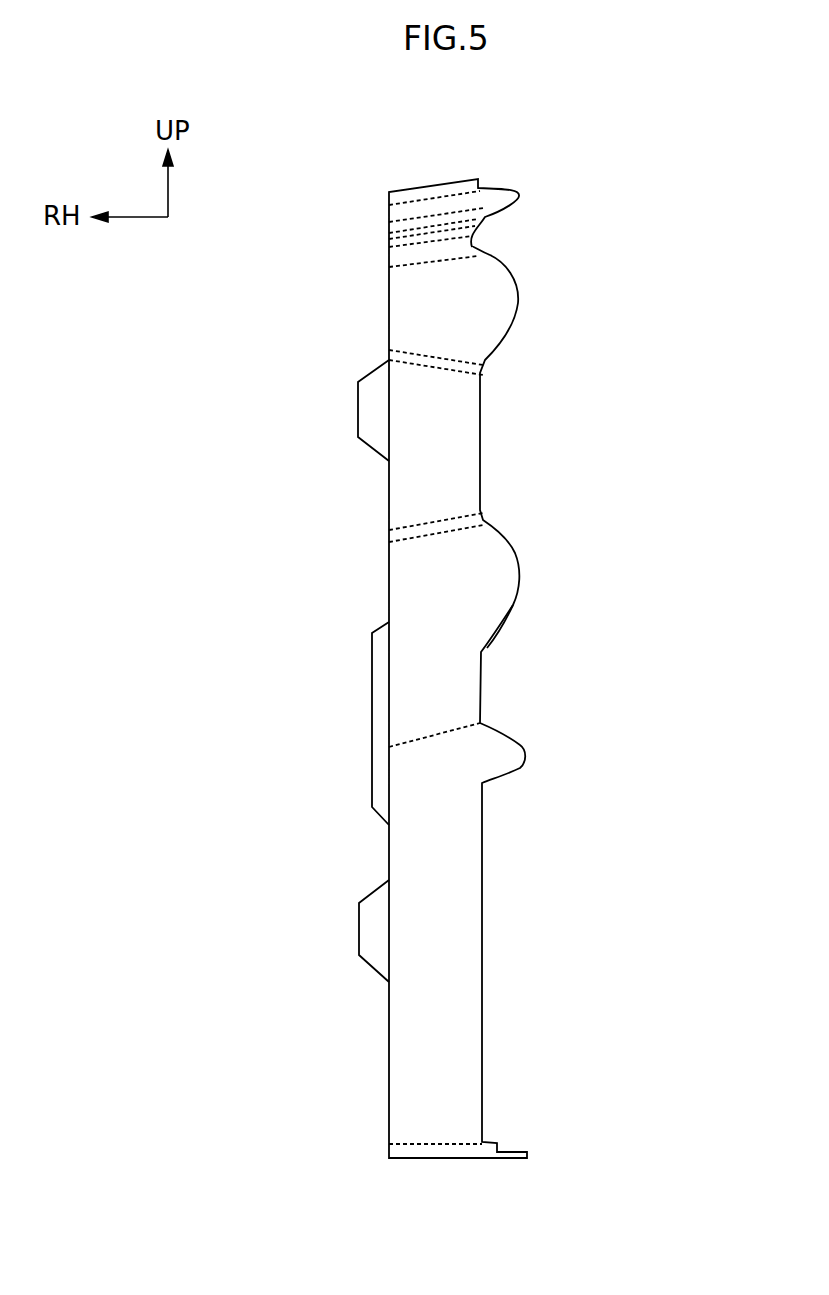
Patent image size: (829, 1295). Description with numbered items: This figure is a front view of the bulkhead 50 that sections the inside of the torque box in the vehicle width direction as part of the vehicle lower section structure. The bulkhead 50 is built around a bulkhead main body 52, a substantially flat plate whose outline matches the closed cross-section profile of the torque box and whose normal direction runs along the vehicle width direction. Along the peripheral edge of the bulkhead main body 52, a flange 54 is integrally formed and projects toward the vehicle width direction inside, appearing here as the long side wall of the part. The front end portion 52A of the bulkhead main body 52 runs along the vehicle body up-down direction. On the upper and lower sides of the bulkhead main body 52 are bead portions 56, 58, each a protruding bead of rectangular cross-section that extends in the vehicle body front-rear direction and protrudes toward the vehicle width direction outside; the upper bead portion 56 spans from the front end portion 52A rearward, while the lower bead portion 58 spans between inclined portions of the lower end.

The bulkhead 50 is at (516, 155).
The bulkhead main body 52 is at (380, 308).
The front end portion 52A is at (388, 573).
The flange 54 is at (468, 932).
The bead portion 56 is at (372, 418).
The bead portion 58 is at (372, 928).